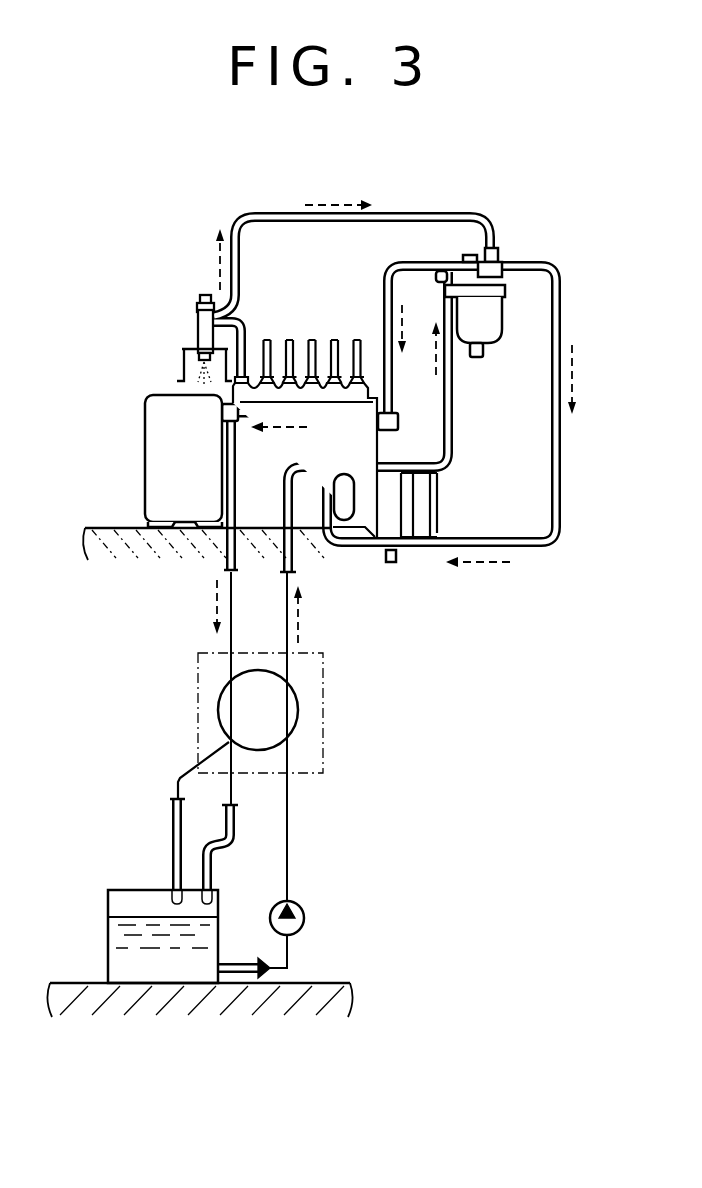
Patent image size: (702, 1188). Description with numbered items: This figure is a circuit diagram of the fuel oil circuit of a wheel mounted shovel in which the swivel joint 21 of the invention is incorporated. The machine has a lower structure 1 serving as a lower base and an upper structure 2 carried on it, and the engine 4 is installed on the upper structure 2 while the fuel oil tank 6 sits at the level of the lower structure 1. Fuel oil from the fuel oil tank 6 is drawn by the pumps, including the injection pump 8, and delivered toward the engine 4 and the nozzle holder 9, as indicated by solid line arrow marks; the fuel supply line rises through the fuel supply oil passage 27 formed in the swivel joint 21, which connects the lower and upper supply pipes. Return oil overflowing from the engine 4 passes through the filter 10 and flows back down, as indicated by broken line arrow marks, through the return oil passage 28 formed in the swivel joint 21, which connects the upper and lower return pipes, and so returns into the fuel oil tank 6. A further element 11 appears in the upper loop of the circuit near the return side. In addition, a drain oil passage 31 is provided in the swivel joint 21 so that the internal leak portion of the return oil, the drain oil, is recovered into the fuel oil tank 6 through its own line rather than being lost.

The lower structure 1 is at (331, 976).
The upper structure 2 is at (123, 518).
The engine 4 is at (318, 326).
The fuel oil tank 6 is at (108, 905).
The injection pump 8 is at (304, 918).
The nozzle holder 9 is at (356, 521).
The filter 10 is at (196, 320).
The fuel filter 11 is at (500, 331).
The swivel joint 21 is at (337, 737).
The fuel supply oil passage 27 is at (291, 694).
The return oil passage 28 is at (222, 692).
The drain oil passage 31 is at (212, 756).